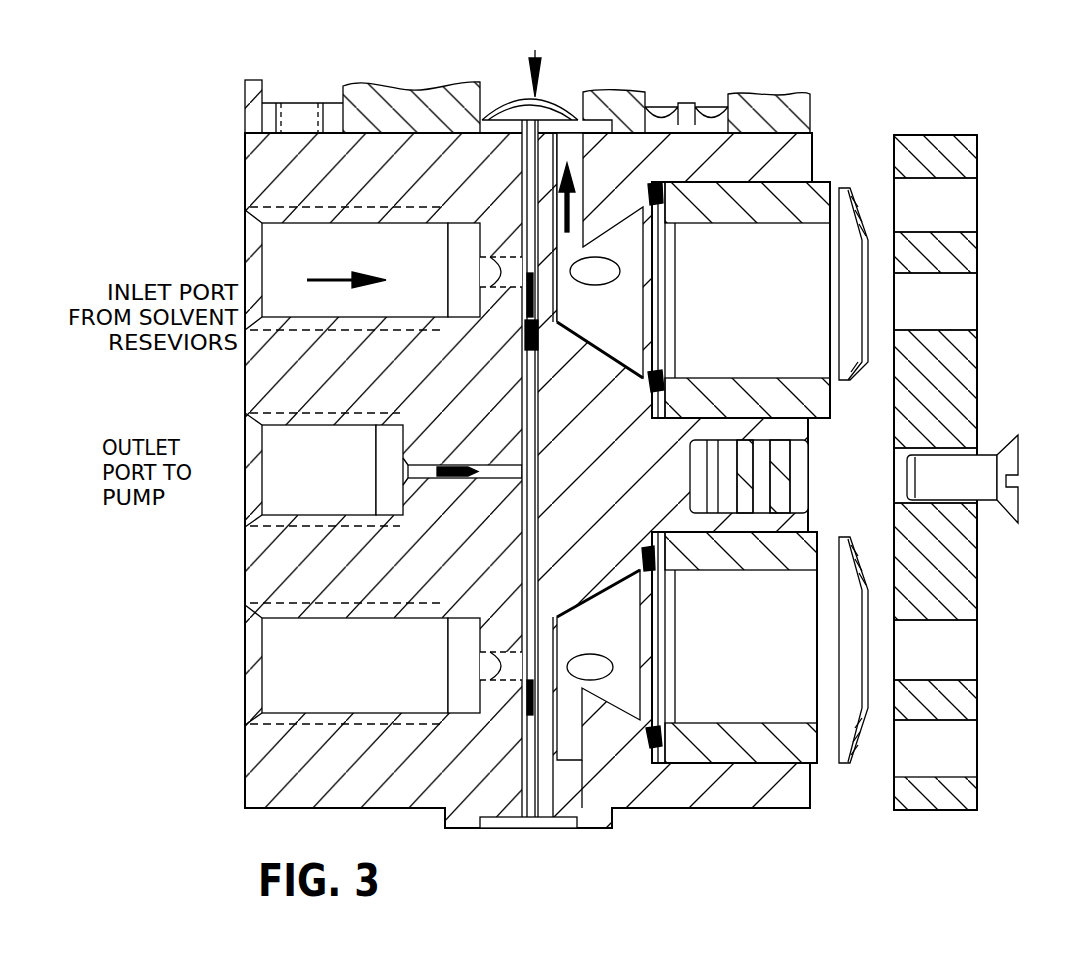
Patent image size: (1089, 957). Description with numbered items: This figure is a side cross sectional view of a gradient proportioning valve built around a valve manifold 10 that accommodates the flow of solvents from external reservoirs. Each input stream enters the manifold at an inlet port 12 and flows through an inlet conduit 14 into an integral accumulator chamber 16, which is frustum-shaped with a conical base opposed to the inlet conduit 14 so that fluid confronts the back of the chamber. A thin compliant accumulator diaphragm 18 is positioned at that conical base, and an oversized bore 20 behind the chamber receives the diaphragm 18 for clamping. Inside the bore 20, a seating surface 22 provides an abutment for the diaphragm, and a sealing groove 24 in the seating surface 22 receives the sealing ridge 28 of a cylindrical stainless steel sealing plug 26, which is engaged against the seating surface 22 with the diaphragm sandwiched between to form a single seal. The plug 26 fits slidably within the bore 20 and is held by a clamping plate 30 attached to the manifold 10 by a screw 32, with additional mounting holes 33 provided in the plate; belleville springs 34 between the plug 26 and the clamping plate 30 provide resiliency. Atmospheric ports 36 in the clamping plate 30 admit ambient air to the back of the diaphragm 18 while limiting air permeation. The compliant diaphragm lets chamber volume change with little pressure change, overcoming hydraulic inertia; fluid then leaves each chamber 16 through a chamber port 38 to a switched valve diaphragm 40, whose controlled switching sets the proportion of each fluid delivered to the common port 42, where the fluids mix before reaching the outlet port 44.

The valve manifold 10 is at (186, 168).
The inlet port 12 is at (245, 258).
The inlet conduit 14 is at (488, 272).
The accumulator chamber 16 is at (632, 345).
The accumulator diaphragm 18 is at (652, 308).
The bore 20 is at (676, 276).
The seating surface 22 is at (656, 212).
The sealing groove 24 is at (660, 216).
The sealing plug 26 is at (798, 226).
The sealing ridge 28 is at (680, 322).
The clamping plate 30 is at (980, 370).
The screw 32 is at (1020, 450).
The mounting hole 33 is at (979, 209).
The belleville spring 34 is at (858, 212).
The atmospheric port 36 is at (979, 321).
The chamber port 38 is at (582, 125).
The valve diaphragm 40 is at (530, 74).
The common port 42 is at (527, 228).
The outlet port 44 is at (323, 482).